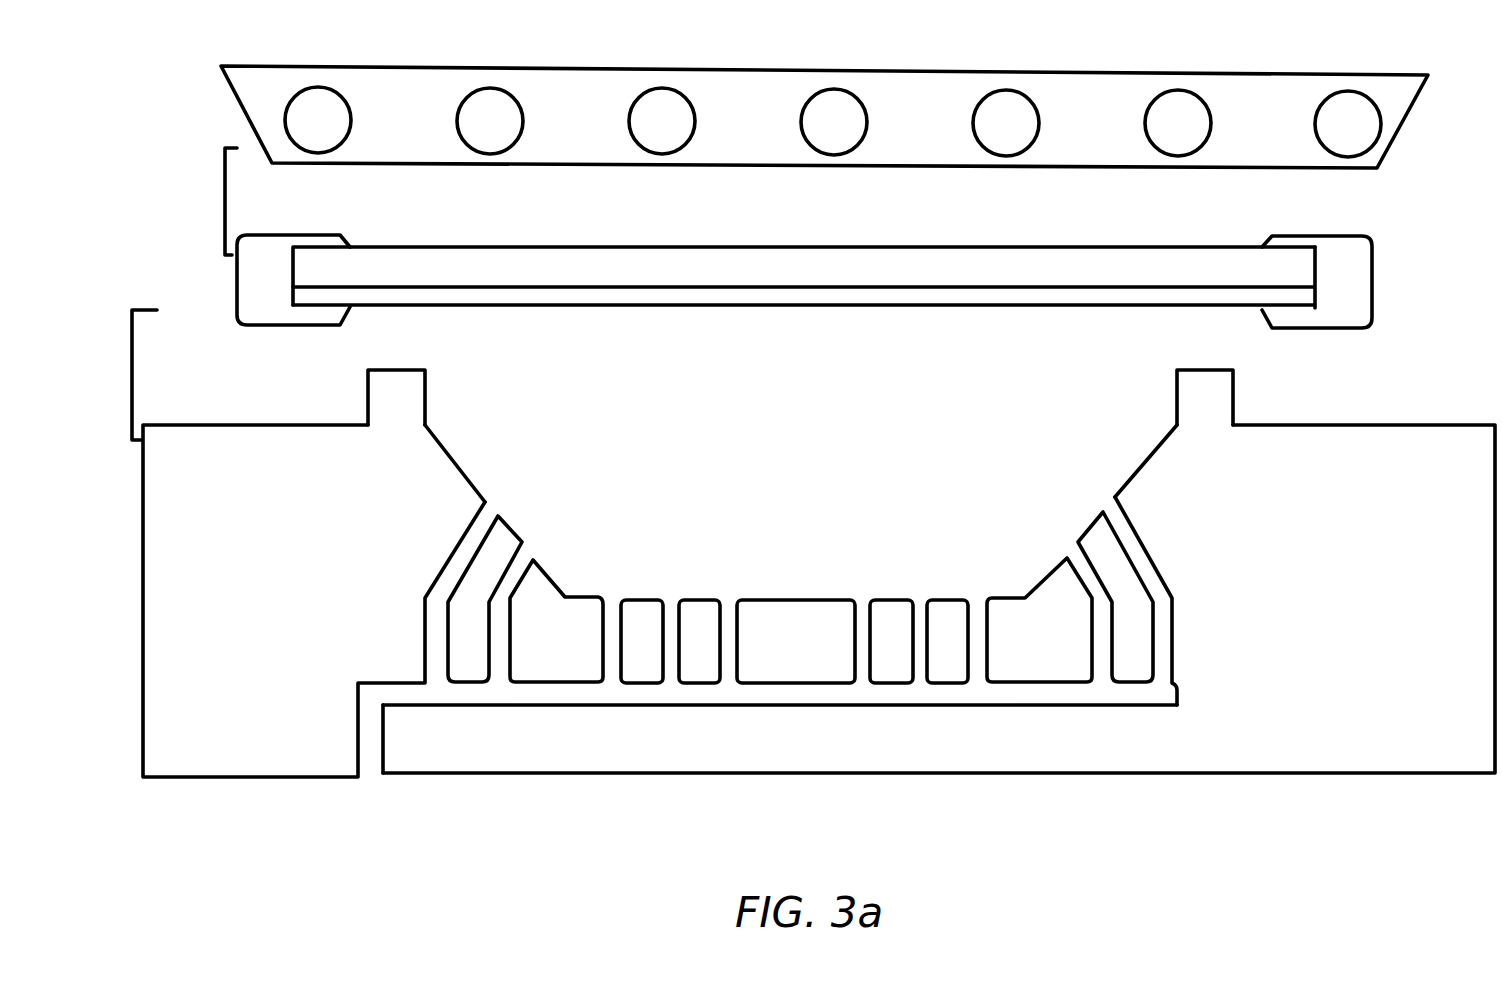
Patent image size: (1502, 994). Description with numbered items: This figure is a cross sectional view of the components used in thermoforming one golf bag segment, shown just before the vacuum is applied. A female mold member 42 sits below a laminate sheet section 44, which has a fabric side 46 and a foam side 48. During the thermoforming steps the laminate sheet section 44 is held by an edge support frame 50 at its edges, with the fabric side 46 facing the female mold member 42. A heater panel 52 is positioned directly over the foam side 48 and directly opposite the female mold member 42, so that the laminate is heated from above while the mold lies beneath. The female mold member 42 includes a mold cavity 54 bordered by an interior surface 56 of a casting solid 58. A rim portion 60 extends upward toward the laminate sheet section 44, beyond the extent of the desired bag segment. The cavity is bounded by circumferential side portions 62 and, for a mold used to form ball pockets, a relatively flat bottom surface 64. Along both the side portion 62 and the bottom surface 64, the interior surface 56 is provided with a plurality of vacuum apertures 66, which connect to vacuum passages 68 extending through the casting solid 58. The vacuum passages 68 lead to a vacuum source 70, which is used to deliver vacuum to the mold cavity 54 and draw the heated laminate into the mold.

The female mold member 42 is at (1310, 634).
The laminate sheet section 44 is at (797, 295).
The fabric side 46 is at (1080, 297).
The foam side 48 is at (1021, 266).
The edge support frame 50 is at (263, 272).
The heater panel 52 is at (753, 153).
The mold cavity 54 is at (800, 564).
The interior surface 56 is at (802, 600).
The casting solid 58 is at (348, 546).
The rim portion 60 is at (397, 393).
The circumferential side portion 62 is at (488, 461).
The bottom surface 64 is at (757, 600).
The vacuum apertures 66 is at (483, 508).
The vacuum passages 68 is at (780, 730).
The vacuum source 70 is at (355, 774).